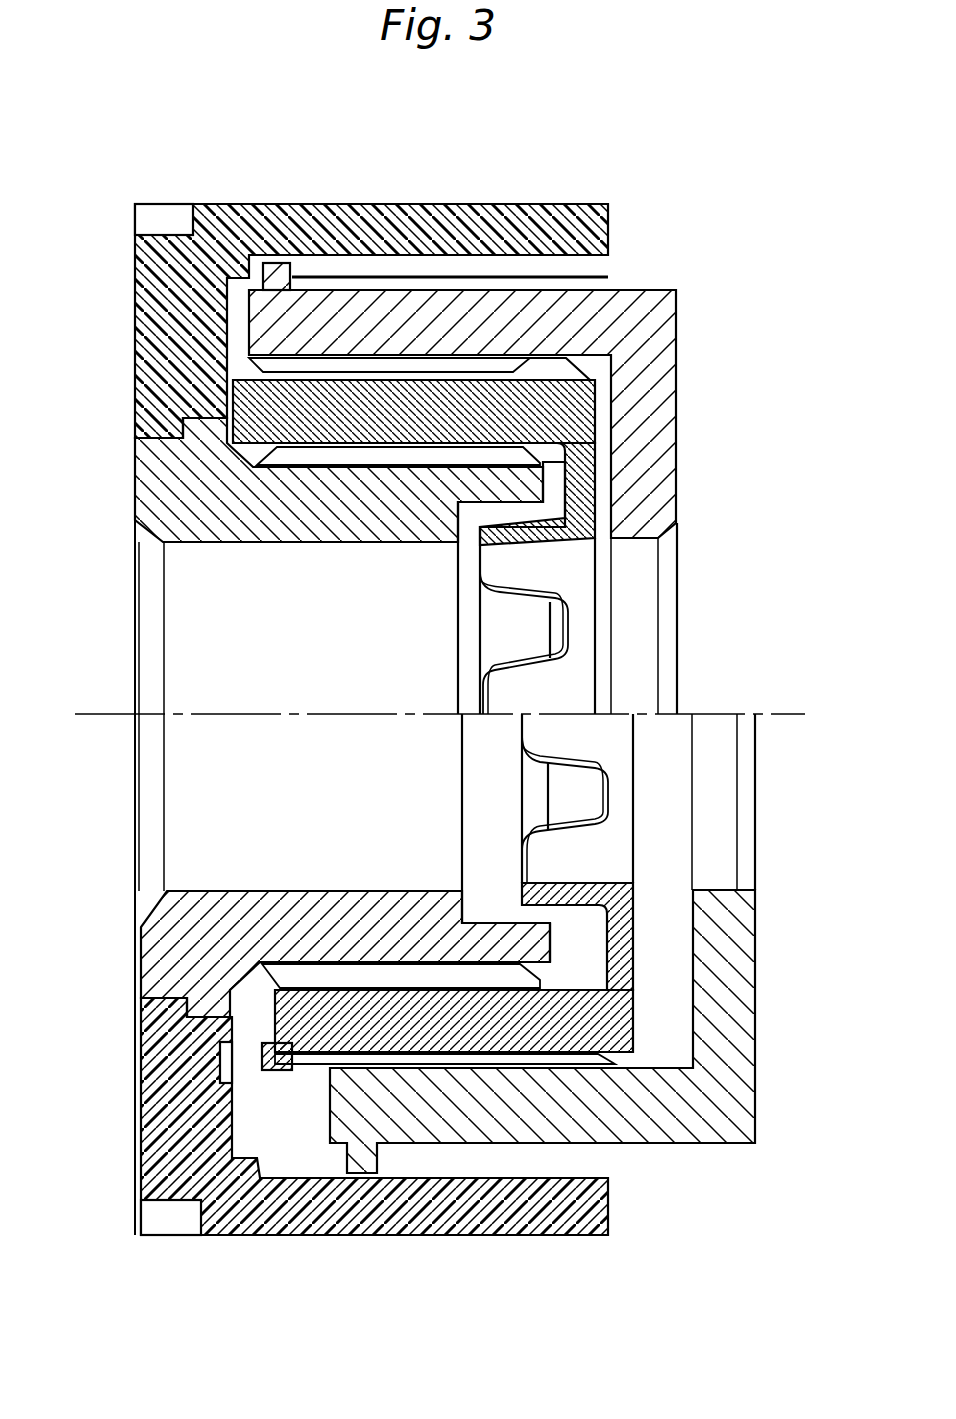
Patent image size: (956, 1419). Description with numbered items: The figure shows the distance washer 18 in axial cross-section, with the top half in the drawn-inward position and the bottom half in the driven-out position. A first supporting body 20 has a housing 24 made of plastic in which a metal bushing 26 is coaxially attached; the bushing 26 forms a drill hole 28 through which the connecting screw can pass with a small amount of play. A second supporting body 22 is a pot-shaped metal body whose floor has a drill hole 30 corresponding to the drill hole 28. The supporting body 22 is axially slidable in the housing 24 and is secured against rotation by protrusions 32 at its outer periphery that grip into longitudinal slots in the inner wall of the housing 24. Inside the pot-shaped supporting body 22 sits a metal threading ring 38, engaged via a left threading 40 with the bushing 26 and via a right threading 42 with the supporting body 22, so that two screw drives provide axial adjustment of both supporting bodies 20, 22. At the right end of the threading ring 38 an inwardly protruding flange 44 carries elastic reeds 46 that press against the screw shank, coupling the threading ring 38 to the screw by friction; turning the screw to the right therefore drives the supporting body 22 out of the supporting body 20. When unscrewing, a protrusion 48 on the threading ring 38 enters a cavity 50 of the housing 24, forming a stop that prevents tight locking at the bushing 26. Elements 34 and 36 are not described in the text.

The distance washer 18 is at (643, 167).
The supporting body 20 is at (322, 646).
The supporting body 22 is at (523, 646).
The housing 24 is at (353, 204).
The bushing 26 is at (160, 485).
The drill hole 28 is at (230, 547).
The drill hole 30 is at (637, 540).
The protrusions 32 is at (282, 262).
The shim plate 34 is at (512, 262).
The flange 36 is at (153, 221).
The threading ring 38 is at (497, 838).
The left threading 40 is at (337, 455).
The right threading 42 is at (415, 367).
The flange 44 is at (578, 487).
The elastic reeds 46 is at (488, 573).
The protrusion 48 is at (279, 1073).
The cavity 50 is at (222, 1060).